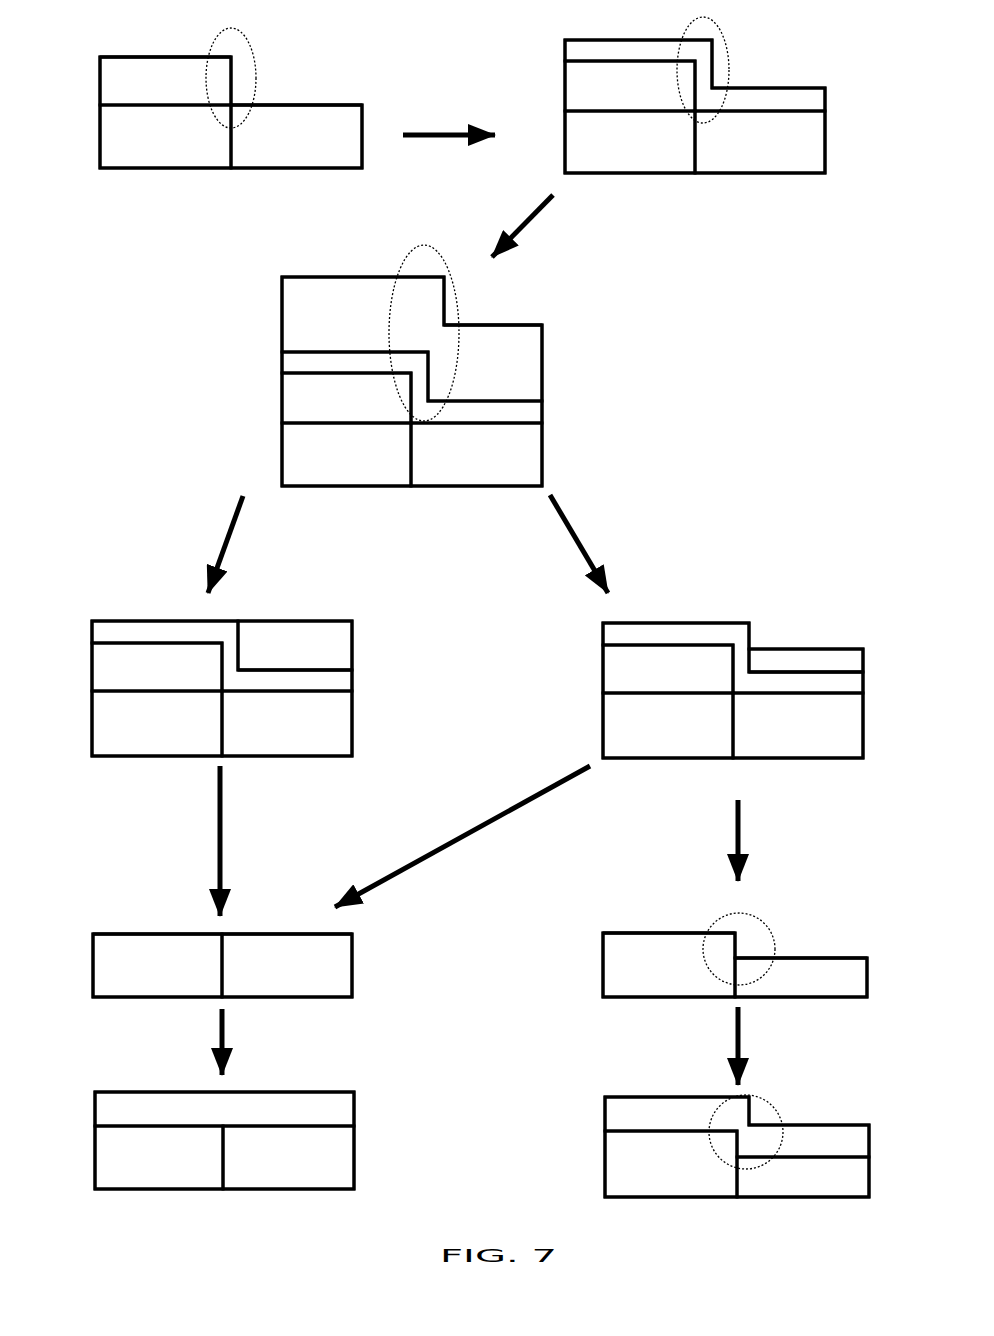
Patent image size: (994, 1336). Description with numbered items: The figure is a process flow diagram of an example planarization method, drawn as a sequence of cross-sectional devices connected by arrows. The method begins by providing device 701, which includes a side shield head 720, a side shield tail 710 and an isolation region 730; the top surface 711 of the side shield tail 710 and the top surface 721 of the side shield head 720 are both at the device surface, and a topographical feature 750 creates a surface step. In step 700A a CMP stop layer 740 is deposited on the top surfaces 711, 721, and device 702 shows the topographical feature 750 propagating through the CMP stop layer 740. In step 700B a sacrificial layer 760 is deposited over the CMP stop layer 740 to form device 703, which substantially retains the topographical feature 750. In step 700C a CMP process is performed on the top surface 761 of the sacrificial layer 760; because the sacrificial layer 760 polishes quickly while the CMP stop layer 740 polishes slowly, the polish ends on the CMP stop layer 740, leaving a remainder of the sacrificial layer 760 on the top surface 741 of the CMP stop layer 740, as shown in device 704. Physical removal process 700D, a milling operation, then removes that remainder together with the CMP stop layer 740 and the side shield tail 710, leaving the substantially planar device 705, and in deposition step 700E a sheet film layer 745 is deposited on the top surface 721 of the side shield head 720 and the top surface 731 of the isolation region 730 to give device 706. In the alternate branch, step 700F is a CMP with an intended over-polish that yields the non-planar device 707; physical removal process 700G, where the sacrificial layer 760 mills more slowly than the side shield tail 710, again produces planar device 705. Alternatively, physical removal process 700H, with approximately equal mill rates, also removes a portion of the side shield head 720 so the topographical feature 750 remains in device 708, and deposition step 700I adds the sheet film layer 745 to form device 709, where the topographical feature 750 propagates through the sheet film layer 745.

The device 701 is at (398, 67).
The device 702 is at (826, 59).
The device 703 is at (645, 384).
The structure after planarizing second dielectric layer 704 is at (88, 596).
The device 705 is at (96, 916).
The structure after forming dielectric layer 706 is at (96, 1072).
The device 707 is at (852, 566).
The device 708 is at (881, 905).
The device 709 is at (881, 1090).
The side shield tail 710 is at (117, 67).
The top surface of side shield tail 711 is at (168, 55).
The side shield head 720 is at (335, 113).
The top surface of side shield head 721 is at (287, 102).
The isolation region 730 is at (128, 162).
The top surface of isolation region 731 is at (144, 933).
The CMP stop layer 740 is at (815, 95).
The top surface of CMP stop layer 741 is at (260, 668).
The sheet film layer 745 is at (342, 1104).
The topographical feature 750 is at (248, 52).
The sacrificial layer 760 is at (532, 333).
The top surface of sacrificial layer 761 is at (509, 323).
The step 700A is at (449, 118).
The step 700B is at (515, 226).
The step 700C is at (206, 544).
The physical removal process 700D is at (189, 841).
The deposition step 700E is at (192, 1042).
The step 700F is at (617, 544).
The physical removal process 700G is at (462, 836).
The physical removal process 700H is at (767, 840).
The deposition step 700I is at (766, 1046).